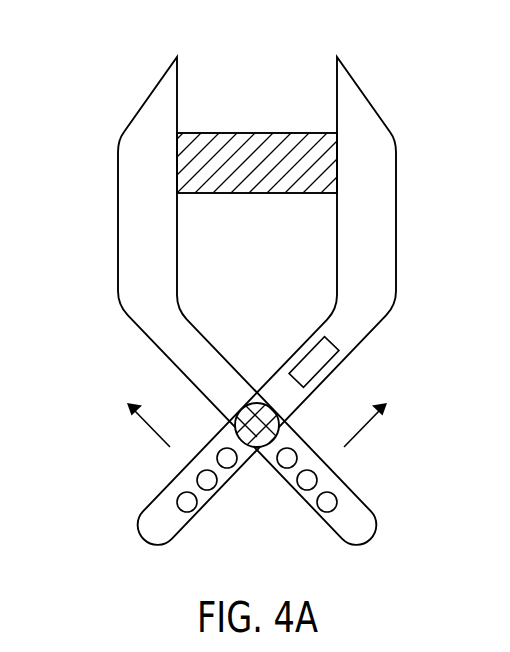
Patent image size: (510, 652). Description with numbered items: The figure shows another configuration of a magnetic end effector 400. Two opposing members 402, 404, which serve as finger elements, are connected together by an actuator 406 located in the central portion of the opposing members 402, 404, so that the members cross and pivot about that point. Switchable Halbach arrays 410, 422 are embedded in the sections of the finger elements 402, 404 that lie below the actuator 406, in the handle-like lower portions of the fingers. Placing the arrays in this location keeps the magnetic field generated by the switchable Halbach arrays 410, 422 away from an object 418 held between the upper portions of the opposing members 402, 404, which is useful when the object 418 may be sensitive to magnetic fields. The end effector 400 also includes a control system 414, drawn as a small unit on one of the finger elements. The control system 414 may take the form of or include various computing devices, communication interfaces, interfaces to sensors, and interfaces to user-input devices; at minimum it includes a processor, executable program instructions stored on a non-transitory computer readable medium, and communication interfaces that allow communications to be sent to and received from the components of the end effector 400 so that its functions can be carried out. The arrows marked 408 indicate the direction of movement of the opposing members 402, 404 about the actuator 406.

The magnetic end effector 400 is at (249, 285).
The opposing member 402 is at (138, 178).
The opposing member 404 is at (373, 178).
The actuator 406 is at (234, 425).
The direction of jaw movement 408 is at (152, 430).
The switchable Halbach array 410 is at (214, 506).
The control system 414 is at (316, 362).
The object 418 is at (257, 173).
The switchable Halbach array 422 is at (300, 506).